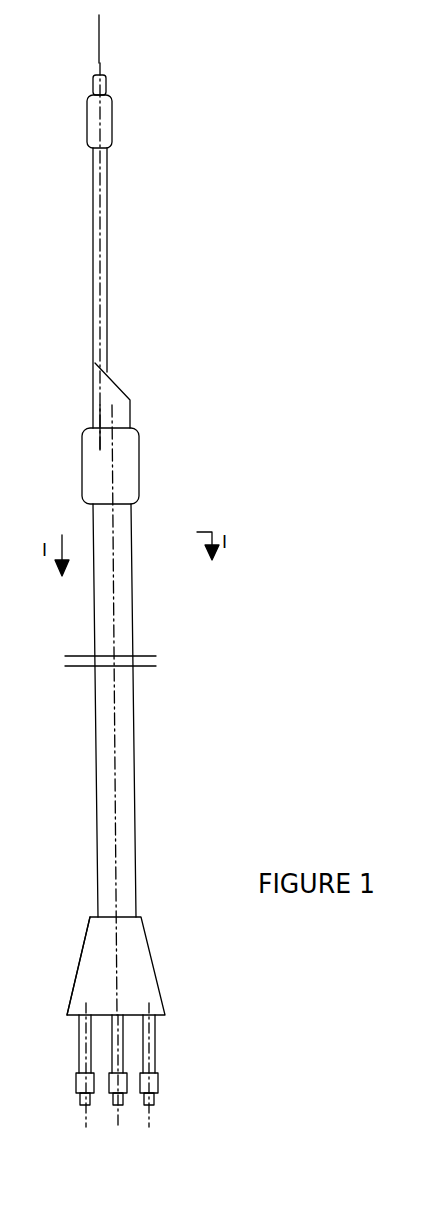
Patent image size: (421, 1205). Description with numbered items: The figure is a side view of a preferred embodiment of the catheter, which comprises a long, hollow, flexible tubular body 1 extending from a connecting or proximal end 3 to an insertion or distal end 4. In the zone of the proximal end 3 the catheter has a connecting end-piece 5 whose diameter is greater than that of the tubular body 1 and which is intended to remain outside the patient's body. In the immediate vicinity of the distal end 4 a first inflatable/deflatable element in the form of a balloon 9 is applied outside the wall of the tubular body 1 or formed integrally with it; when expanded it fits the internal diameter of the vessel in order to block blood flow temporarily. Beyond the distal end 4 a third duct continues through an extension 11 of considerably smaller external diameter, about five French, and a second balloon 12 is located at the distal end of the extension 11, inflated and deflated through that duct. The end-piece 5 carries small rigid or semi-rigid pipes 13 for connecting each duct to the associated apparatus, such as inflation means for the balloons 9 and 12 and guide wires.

The tubular body 1 is at (135, 583).
The proximal end 3 is at (135, 915).
The distal end 4 is at (119, 380).
The connecting end-piece 5 is at (84, 944).
The first inflatable/deflatable element 9 is at (139, 458).
The extension 11 is at (110, 258).
The second inflatable/deflatable element 12 is at (112, 118).
The small rigid or semi-rigid pipes 13 is at (78, 1043).